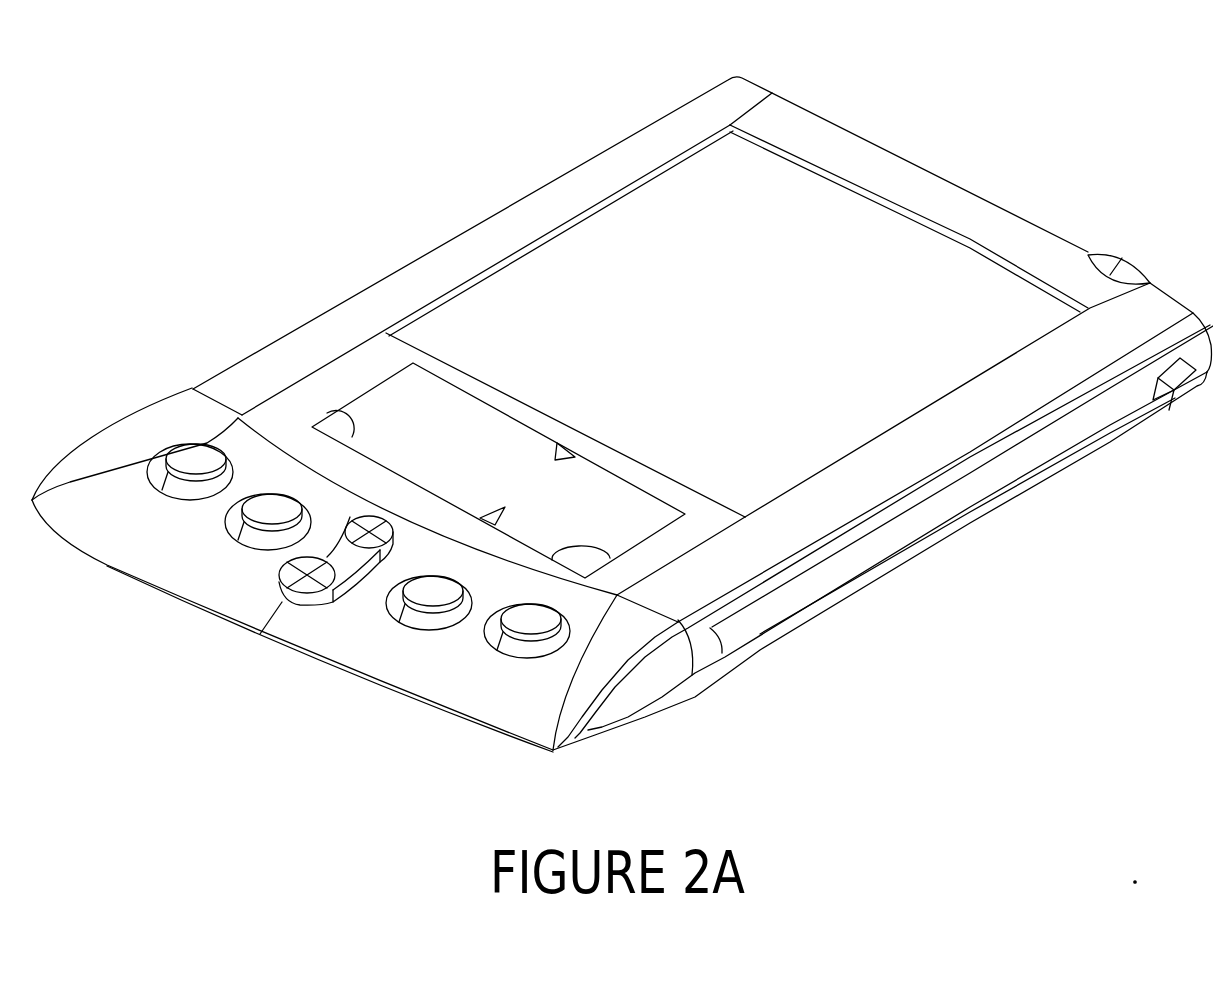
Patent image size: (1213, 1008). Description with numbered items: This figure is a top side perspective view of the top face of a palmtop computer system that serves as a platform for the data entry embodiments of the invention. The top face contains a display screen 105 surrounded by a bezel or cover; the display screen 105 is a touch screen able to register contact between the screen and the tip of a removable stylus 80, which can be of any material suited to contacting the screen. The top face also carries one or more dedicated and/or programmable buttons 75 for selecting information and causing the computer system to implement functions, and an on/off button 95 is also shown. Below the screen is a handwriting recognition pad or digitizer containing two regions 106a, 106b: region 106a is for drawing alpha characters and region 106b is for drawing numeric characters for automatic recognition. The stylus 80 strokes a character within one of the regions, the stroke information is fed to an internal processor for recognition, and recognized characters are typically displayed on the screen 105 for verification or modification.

The buttons 75 is at (185, 452).
The stylus 80 is at (988, 472).
The on/off button 95 is at (1110, 250).
The display screen 105 is at (744, 236).
The region 106a is at (451, 449).
The region 106b is at (609, 527).